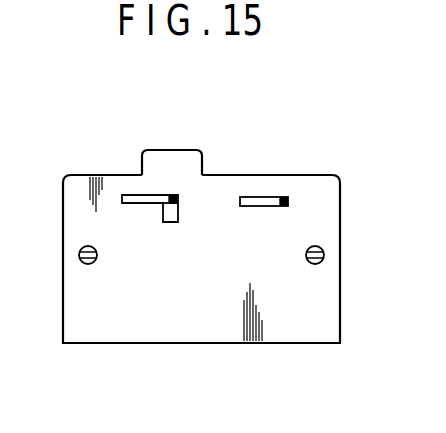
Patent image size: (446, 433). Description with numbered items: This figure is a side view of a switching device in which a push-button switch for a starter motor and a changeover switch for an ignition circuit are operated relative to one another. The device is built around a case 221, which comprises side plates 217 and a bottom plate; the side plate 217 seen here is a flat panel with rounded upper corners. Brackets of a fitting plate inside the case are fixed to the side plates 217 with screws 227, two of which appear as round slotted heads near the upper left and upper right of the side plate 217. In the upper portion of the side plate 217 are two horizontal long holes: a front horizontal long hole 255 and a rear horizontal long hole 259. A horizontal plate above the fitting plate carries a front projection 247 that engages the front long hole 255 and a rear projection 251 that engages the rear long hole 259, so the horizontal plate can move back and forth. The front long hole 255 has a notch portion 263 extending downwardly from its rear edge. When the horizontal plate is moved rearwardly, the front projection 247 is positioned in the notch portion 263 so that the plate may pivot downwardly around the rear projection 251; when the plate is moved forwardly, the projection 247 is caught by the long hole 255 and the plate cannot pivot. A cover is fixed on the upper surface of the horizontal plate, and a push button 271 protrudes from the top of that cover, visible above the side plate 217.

The side plate 217 is at (314, 307).
The case 221 is at (156, 352).
The screw 227 is at (80, 250).
The projection 247 is at (174, 197).
The projection 251 is at (283, 198).
The horizontal long hole 255 is at (130, 197).
The horizontal long hole 259 is at (255, 197).
The notch portion 263 is at (178, 223).
The push button 271 is at (173, 160).